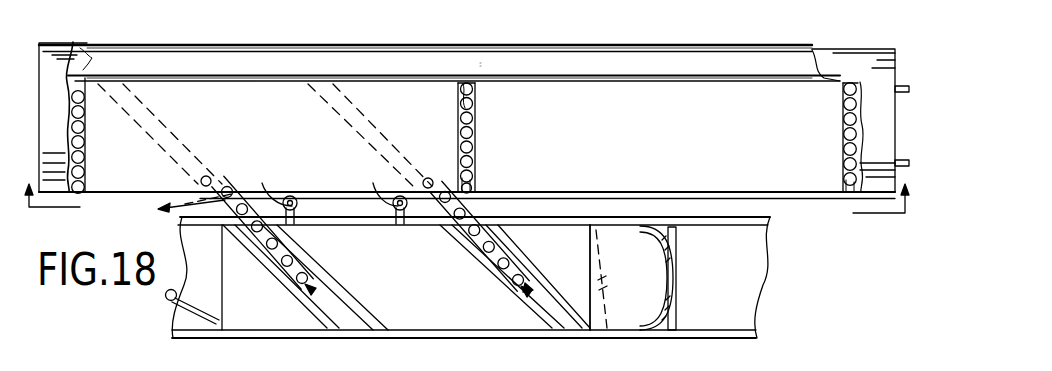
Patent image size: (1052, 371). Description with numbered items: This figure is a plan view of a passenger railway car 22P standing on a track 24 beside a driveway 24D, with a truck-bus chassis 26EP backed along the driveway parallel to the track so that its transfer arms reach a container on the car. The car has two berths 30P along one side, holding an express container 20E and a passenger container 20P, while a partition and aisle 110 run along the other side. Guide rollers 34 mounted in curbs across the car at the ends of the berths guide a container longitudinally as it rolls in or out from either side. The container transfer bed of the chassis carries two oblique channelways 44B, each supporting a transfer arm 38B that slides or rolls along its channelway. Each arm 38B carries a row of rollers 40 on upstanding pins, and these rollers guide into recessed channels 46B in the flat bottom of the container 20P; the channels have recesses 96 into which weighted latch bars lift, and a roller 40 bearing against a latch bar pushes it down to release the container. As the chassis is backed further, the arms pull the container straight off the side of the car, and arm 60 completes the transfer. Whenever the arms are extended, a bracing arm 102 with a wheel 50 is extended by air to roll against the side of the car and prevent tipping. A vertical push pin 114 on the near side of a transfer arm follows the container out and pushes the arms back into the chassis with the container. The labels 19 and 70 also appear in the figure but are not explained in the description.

The guide rollers 34 is at (77, 100).
The passenger container 20P is at (150, 86).
The passenger railway car 22P is at (187, 43).
The recesses 96 is at (268, 62).
The berths 30P is at (388, 107).
The partition and aisle 110 is at (538, 60).
The express container 20E is at (746, 100).
The track 24 is at (910, 176).
The recessed channels 46B is at (372, 140).
The wheel 50 is at (266, 195).
The bracing arm 102 is at (382, 187).
The roller assembly 70 is at (476, 184).
The section line 19 is at (467, 219).
The rollers 40 is at (177, 216).
The arm 60 is at (172, 317).
The transfer arm 38B is at (485, 258).
The vertical push pin 114 is at (520, 285).
The oblique channelways 44B is at (547, 310).
The truck-bus chassis 26EP is at (617, 322).
The driveway 24D is at (750, 295).